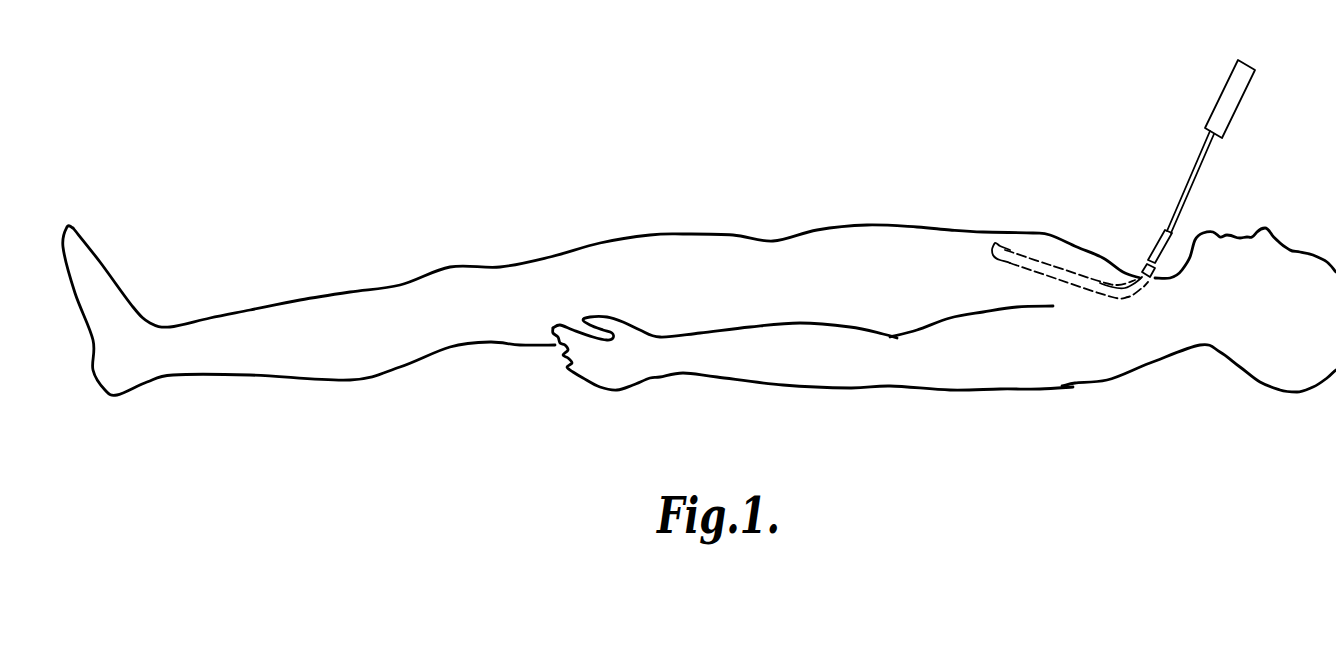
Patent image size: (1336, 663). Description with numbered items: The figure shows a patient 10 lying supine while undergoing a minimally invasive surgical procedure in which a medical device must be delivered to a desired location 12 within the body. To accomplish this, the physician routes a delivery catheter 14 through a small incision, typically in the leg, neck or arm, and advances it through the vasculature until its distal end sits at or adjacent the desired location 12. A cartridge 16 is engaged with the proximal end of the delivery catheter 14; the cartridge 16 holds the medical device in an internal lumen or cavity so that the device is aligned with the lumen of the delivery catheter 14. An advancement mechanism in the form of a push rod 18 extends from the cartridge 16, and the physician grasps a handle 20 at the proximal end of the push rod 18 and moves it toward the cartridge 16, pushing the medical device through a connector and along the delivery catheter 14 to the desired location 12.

The patient 10 is at (1135, 172).
The desired location 12 is at (995, 243).
The delivery catheter 14 is at (1112, 297).
The cartridge 16 is at (1165, 230).
The push rod 18 is at (1193, 183).
The handle 20 is at (1225, 93).